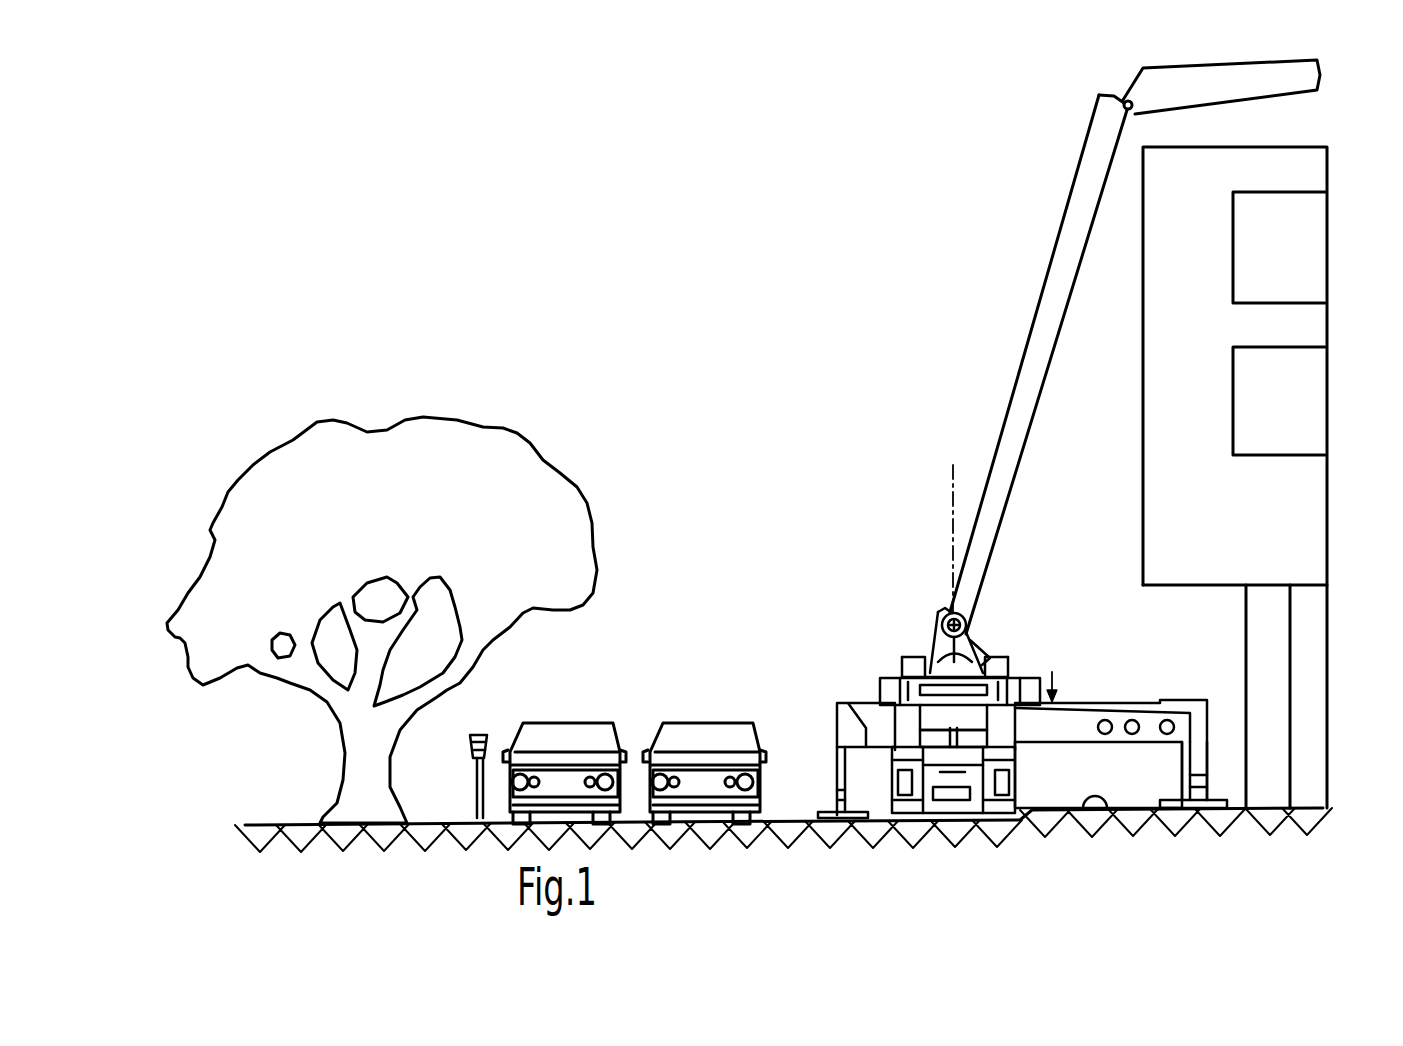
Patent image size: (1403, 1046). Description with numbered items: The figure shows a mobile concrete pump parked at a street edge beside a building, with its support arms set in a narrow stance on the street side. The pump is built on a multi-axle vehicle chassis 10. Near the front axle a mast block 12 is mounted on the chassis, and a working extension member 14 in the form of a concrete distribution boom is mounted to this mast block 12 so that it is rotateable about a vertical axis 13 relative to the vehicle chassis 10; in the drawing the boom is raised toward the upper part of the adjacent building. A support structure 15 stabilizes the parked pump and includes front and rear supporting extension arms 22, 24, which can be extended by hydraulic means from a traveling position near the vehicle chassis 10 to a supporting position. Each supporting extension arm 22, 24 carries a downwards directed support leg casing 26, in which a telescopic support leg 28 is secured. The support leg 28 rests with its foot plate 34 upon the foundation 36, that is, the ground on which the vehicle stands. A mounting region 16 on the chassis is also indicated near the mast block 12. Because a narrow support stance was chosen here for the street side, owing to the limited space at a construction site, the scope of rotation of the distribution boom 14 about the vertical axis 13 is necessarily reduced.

The multi-axle vehicle chassis 10 is at (955, 782).
The mast block 12 is at (975, 632).
The vertical axis 13 is at (953, 490).
The working extension member 14 is at (1070, 225).
The support structure 15 is at (1056, 692).
The rotary mount 16 is at (1012, 690).
The front supporting extension arm 22 is at (1147, 707).
The rear supporting extension arm 24 is at (1073, 735).
The support leg casing 26 is at (835, 753).
The telescopic support leg 28 is at (833, 800).
The foot plate 34 is at (833, 820).
The foundation 36 is at (1100, 808).